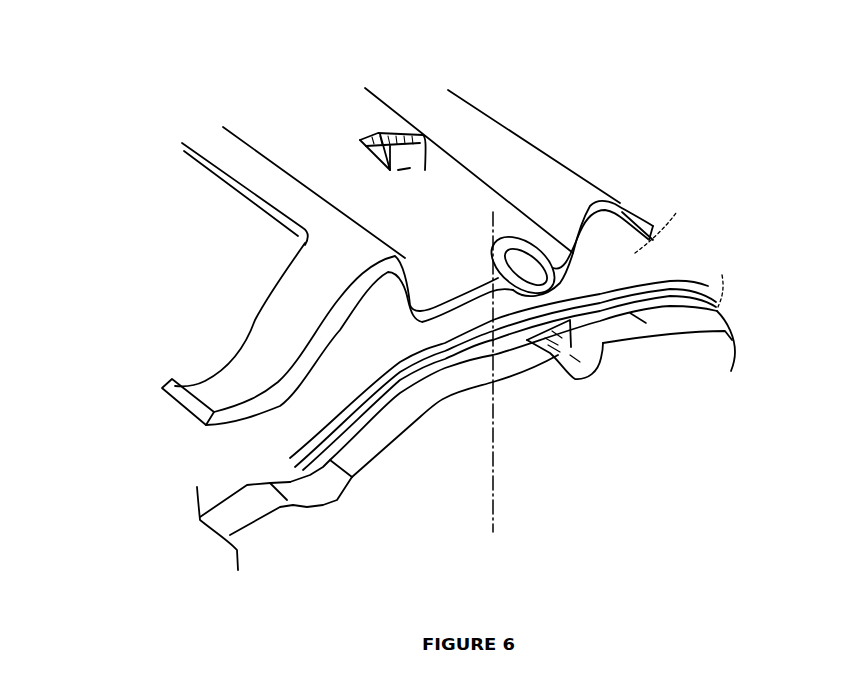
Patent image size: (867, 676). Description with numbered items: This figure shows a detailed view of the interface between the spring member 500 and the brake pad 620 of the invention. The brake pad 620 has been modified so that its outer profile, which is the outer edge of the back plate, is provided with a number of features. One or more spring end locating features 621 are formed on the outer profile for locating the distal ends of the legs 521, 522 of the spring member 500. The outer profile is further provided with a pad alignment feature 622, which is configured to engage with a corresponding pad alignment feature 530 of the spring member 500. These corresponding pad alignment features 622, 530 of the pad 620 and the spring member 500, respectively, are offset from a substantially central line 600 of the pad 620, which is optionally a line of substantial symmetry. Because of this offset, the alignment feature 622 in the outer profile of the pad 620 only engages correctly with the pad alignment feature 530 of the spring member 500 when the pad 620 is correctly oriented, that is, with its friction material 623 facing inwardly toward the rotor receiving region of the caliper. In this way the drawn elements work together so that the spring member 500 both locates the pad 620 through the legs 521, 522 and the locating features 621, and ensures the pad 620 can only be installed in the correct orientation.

The spring member 500 is at (307, 123).
The leg of the spring member 521 is at (267, 335).
The leg of the spring member 522 is at (622, 213).
The pad alignment feature of the spring member 530 is at (523, 250).
The central line 600 is at (493, 492).
The brake pad 620 is at (449, 498).
The spring end locating feature 621 is at (313, 497).
The pad alignment feature of the brake pad 622 is at (600, 370).
The friction material 623 is at (677, 297).